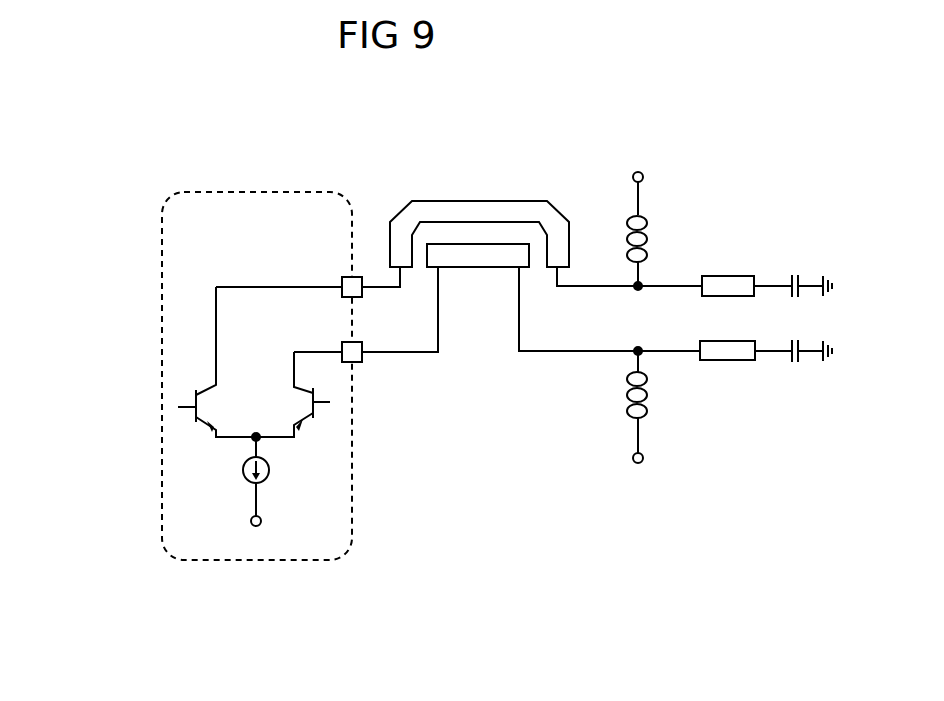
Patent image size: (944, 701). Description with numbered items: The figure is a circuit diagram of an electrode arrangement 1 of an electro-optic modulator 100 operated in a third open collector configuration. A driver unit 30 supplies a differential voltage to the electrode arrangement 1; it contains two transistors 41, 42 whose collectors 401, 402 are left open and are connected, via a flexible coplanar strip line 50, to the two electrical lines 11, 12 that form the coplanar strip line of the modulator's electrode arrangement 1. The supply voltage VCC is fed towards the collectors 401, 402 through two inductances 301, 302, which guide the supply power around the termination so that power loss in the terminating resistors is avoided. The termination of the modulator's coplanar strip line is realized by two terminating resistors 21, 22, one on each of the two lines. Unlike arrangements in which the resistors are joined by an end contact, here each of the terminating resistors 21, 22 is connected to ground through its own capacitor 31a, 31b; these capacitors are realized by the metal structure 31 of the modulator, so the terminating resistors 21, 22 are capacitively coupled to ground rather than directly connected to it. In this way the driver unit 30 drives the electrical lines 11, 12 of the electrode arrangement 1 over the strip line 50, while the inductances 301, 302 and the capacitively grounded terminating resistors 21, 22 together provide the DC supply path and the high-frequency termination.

The modulator 100 is at (483, 185).
The electrode arrangement 1 is at (563, 190).
The electrical line 11 is at (442, 210).
The electrical line 12 is at (483, 255).
The terminating resistor 21 is at (737, 282).
The terminating resistor 22 is at (728, 347).
The driver unit 30 is at (152, 558).
The inductance 301 is at (648, 240).
The inductance 302 is at (640, 436).
The metal structure 31 is at (832, 218).
The capacitor 31a is at (797, 275).
The capacitor 31b is at (798, 362).
The transistor 41 is at (330, 412).
The transistor 42 is at (150, 408).
The collector 401 is at (207, 385).
The collector 402 is at (302, 387).
The flexible coplanar strip line 50 is at (340, 262).